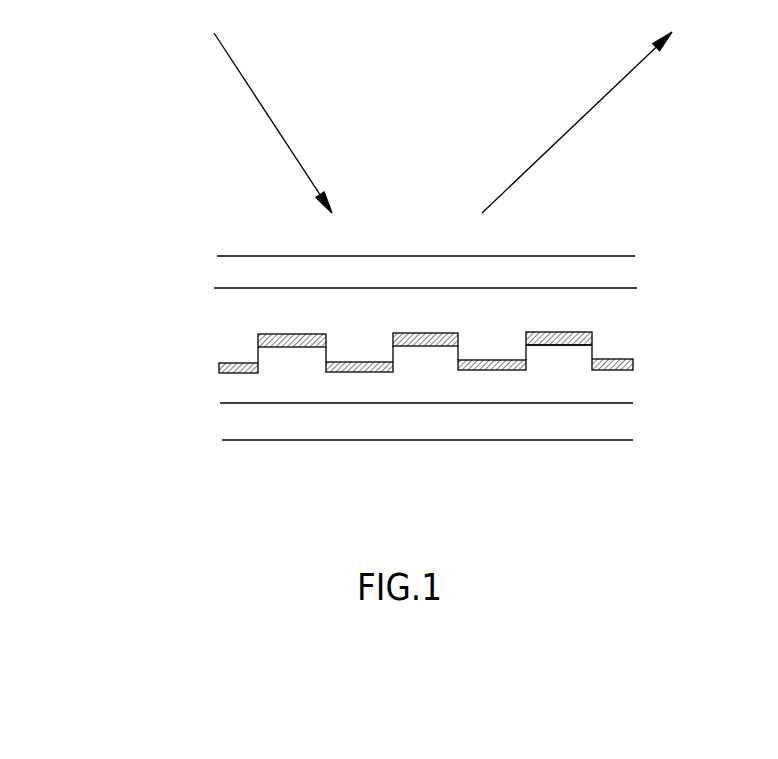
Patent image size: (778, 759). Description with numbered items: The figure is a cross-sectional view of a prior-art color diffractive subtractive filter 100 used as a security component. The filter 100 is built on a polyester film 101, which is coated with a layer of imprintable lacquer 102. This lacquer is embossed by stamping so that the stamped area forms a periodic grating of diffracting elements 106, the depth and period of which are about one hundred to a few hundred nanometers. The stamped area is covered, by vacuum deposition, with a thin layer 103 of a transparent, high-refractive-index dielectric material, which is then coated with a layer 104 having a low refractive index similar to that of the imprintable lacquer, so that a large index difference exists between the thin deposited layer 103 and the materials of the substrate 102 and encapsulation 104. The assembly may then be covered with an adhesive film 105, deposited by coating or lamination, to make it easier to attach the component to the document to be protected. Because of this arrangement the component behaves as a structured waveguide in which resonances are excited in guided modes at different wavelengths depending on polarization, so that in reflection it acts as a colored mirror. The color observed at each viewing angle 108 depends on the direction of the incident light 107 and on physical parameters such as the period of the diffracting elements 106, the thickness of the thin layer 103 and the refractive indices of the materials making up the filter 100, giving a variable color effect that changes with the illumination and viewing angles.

The color diffractive subtractive filter 100 is at (116, 350).
The polyester film 101 is at (373, 270).
The layer of imprintable lacquer 102 is at (627, 299).
The layer of transparent, high-refractive-index dielectric material 103 is at (228, 363).
The low-refractive-index layer 104 is at (233, 387).
The adhesive film 105 is at (553, 425).
The diffracting elements 106 is at (567, 355).
The incident light 107 is at (277, 128).
The viewing angle 108 is at (576, 119).